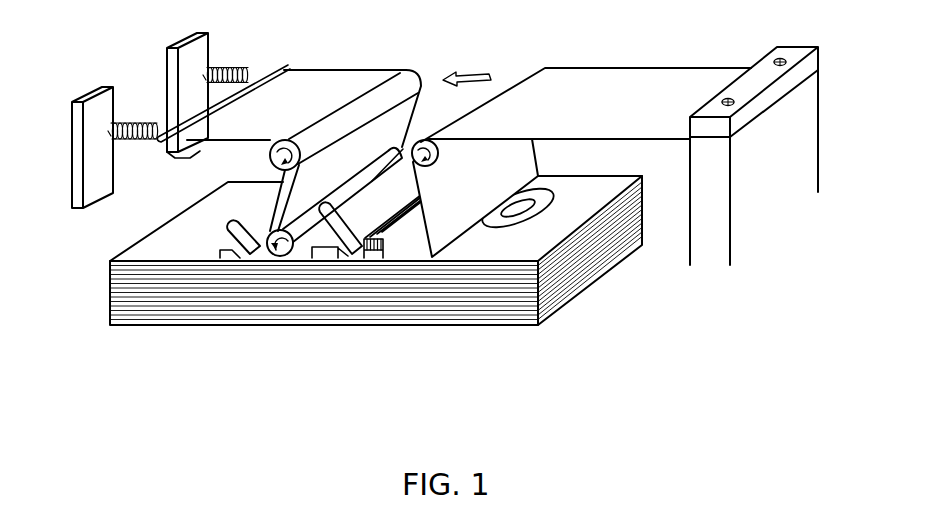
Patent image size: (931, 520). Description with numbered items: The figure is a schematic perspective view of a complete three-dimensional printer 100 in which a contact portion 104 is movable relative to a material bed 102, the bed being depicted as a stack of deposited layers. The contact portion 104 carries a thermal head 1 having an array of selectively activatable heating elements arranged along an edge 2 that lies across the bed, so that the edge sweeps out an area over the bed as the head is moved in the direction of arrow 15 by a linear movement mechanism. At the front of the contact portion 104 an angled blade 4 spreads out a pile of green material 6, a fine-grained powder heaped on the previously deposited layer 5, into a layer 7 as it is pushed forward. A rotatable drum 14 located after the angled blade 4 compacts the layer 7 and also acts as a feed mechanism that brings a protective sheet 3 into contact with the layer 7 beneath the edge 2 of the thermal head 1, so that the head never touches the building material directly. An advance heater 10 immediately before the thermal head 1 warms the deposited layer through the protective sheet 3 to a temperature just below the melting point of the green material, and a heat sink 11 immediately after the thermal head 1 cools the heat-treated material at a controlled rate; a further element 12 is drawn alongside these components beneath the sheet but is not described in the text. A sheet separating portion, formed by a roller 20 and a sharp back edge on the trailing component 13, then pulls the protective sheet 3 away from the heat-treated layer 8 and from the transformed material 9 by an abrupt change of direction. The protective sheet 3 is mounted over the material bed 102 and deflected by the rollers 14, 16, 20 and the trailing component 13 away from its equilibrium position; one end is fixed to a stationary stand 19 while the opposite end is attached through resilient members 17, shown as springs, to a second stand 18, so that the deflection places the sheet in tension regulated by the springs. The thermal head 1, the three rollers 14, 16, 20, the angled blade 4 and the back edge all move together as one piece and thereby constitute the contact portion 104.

The thermal head 1 is at (346, 254).
The edge 2 is at (366, 256).
The protective sheet 3 is at (600, 118).
The angled blade 4 is at (255, 232).
The previously deposited layer 5 is at (207, 238).
The pile of green material 6 is at (233, 250).
The layer 7 is at (264, 246).
The heat-treated layer 8 is at (488, 249).
The transformed material 9 is at (500, 224).
The advance heater 10 is at (327, 253).
The heat sink 11 is at (374, 248).
The strip 12 is at (392, 252).
The trailing component 13 is at (423, 253).
The rotatable drum 14 is at (281, 257).
The arrow 15 is at (464, 76).
The roller 16 is at (270, 152).
The resilient members 17 is at (140, 140).
The stand 18 is at (95, 178).
The stand 19 is at (707, 222).
The roller 20 is at (422, 140).
The printer 100 is at (625, 56).
The material bed 102 is at (110, 298).
The contact portion 104 is at (188, 368).